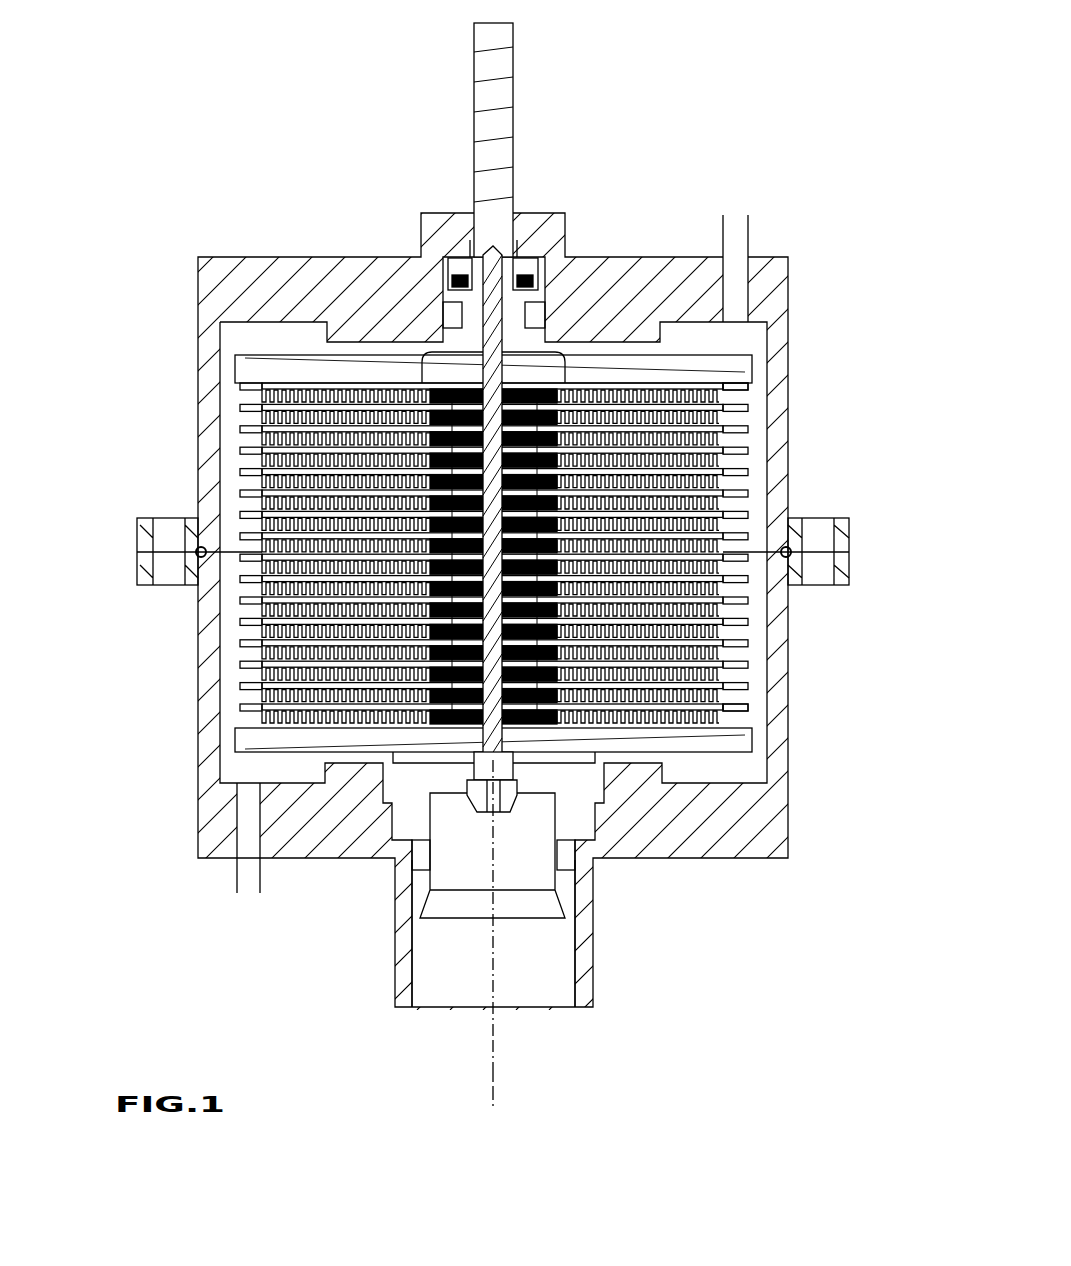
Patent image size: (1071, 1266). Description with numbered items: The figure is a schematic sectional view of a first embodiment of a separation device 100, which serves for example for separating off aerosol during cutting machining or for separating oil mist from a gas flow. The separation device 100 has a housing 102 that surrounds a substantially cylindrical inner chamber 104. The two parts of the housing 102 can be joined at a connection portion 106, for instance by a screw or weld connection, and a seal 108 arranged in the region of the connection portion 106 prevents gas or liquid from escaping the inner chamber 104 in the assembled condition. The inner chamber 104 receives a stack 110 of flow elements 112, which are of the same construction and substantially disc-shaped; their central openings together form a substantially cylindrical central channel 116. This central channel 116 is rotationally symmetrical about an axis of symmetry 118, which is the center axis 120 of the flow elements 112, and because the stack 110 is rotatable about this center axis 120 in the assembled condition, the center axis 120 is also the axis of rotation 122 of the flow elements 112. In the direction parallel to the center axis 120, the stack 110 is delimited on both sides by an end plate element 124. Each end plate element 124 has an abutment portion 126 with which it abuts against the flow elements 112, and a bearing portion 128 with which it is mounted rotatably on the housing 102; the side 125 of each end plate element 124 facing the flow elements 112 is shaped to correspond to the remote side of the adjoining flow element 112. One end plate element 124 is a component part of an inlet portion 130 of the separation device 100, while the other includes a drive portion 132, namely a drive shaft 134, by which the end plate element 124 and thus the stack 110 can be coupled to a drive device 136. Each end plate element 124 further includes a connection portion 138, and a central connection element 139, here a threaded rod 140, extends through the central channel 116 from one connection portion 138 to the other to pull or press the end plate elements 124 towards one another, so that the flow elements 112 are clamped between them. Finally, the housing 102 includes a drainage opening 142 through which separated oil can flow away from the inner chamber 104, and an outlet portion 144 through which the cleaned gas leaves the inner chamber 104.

The separation device 100 is at (686, 100).
The housing 102 is at (206, 650).
The inner chamber 104 is at (742, 768).
The connection portion 106 is at (130, 550).
The seal 108 is at (200, 560).
The stack 110 is at (750, 470).
The flow elements 112 is at (748, 702).
The central channel 116 is at (526, 384).
The axis of symmetry 118 is at (492, 1055).
The center axis 120 is at (495, 1063).
The axis of rotation 122 is at (492, 1097).
The end plate element 124 is at (250, 368).
The side 125 is at (736, 394).
The abutment portion 126 is at (301, 380).
The bearing portion 128 is at (455, 310).
The inlet portion 130 is at (532, 960).
The drive portion 132 is at (497, 205).
The drive shaft 134 is at (482, 117).
The drive device 136 is at (457, 101).
The connection portion 138 is at (486, 333).
The central connection element 139 is at (520, 779).
The threaded rod 140 is at (500, 803).
The drainage opening 142 is at (244, 876).
The outlet portion 144 is at (742, 215).